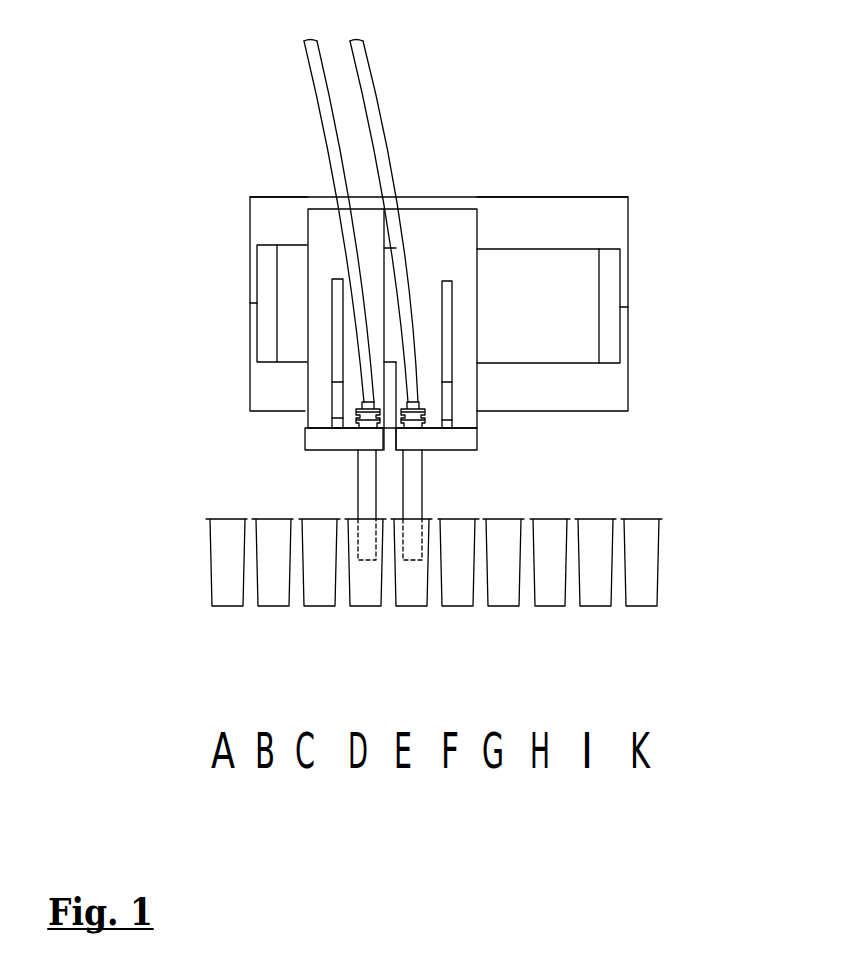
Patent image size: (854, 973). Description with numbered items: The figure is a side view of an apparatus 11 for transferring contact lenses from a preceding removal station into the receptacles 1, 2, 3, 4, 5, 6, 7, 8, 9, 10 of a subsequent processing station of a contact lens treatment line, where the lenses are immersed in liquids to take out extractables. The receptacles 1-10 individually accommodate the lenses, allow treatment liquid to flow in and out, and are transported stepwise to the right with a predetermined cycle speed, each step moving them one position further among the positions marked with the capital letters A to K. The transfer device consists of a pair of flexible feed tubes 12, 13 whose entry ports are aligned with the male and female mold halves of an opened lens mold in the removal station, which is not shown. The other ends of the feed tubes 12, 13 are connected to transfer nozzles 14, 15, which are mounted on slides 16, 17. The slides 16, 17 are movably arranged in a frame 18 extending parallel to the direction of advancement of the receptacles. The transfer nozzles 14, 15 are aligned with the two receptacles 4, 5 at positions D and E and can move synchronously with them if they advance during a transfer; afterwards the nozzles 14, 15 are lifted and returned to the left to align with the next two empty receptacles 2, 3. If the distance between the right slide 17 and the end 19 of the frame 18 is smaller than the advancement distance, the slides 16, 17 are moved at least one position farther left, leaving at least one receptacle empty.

The apparatus 11 is at (155, 123).
The flexible feed tube 12 is at (316, 68).
The flexible feed tube 13 is at (363, 63).
The transfer nozzle 14 is at (365, 477).
The transfer nozzle 15 is at (412, 480).
The slide 16 is at (323, 237).
The slide 17 is at (455, 235).
The frame 18 is at (602, 204).
The end of the frame 19 is at (605, 300).
The receptacle 1 is at (232, 596).
The receptacle 2 is at (279, 596).
The receptacle 3 is at (325, 596).
The receptacle 4 is at (371, 596).
The receptacle 5 is at (417, 596).
The receptacle 6 is at (464, 596).
The receptacle 7 is at (510, 596).
The receptacle 8 is at (556, 596).
The receptacle 9 is at (603, 596).
The receptacle 10 is at (649, 596).